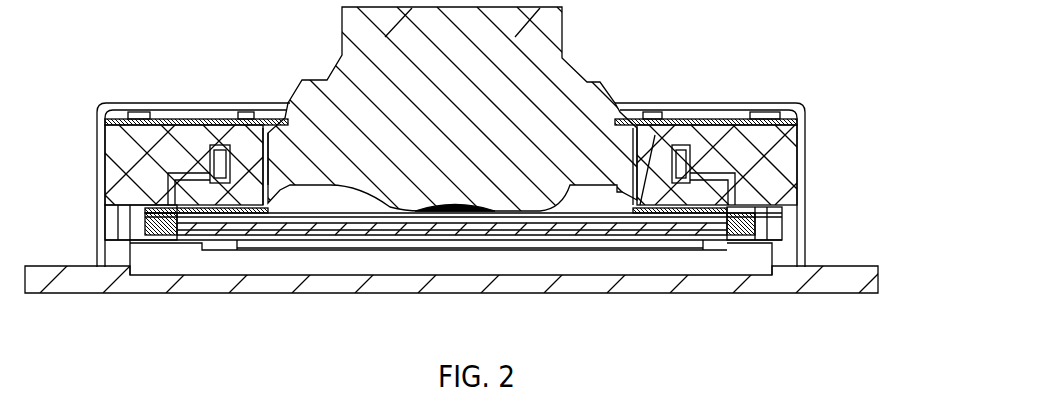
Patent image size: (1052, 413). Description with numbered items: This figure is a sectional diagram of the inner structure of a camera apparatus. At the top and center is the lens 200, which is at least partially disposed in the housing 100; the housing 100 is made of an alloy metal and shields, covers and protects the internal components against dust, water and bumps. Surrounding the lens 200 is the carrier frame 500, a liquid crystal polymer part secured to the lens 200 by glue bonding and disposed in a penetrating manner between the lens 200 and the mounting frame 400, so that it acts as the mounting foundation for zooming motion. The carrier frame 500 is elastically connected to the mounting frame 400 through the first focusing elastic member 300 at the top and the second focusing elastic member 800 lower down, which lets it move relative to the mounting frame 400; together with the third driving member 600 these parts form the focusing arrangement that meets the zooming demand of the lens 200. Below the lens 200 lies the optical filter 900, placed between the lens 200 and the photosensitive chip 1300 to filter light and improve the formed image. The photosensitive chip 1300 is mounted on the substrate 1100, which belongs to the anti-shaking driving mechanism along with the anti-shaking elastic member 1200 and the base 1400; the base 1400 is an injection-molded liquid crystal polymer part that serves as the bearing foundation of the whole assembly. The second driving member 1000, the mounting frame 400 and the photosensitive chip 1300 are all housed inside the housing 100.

The housing 100 is at (802, 110).
The lens 200 is at (538, 90).
The first focusing elastic member 300 is at (717, 122).
The mounting frame 400 is at (773, 155).
The carrier frame 500 is at (653, 138).
The third driving member 600 is at (220, 165).
The second focusing elastic member 800 is at (737, 198).
The optical filter 900 is at (253, 226).
The second driving member 1000 is at (712, 218).
The substrate 1100 is at (720, 232).
The anti-shaking elastic member 1200 is at (147, 228).
The photosensitive chip 1300 is at (240, 242).
The base 1400 is at (845, 282).